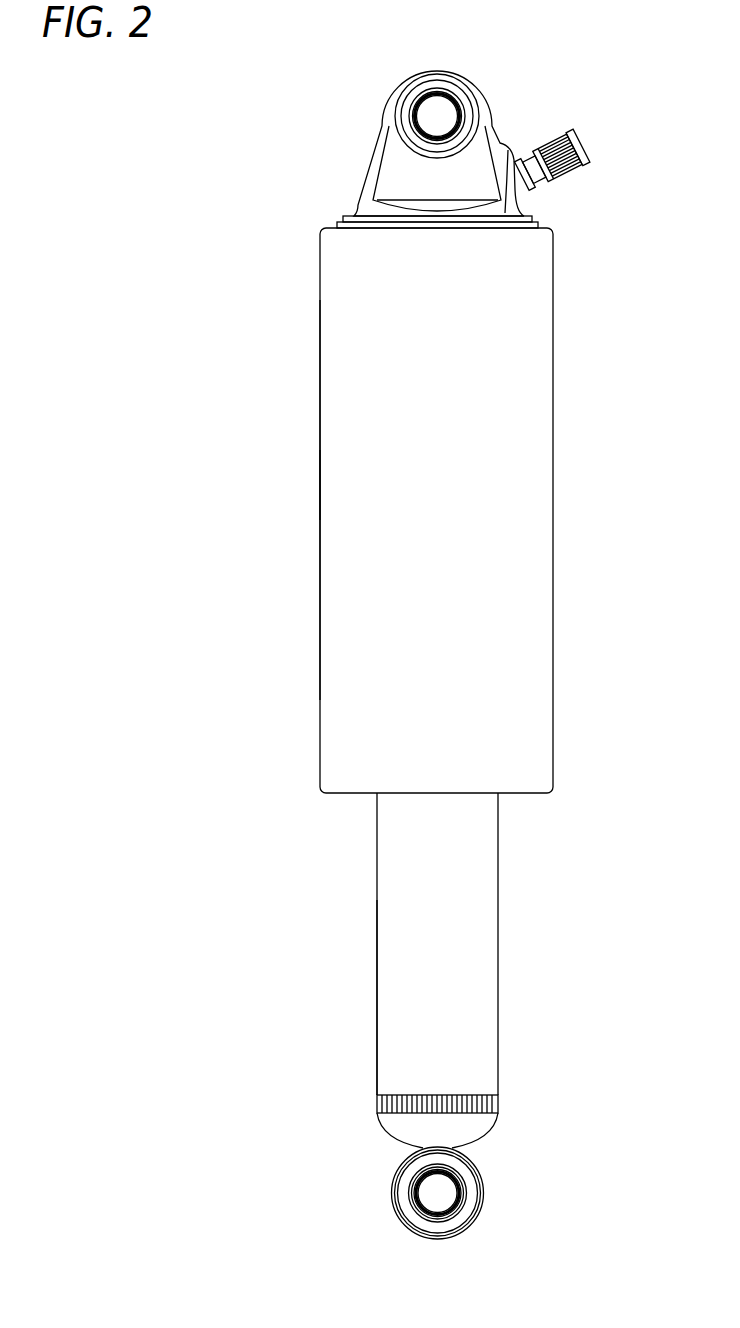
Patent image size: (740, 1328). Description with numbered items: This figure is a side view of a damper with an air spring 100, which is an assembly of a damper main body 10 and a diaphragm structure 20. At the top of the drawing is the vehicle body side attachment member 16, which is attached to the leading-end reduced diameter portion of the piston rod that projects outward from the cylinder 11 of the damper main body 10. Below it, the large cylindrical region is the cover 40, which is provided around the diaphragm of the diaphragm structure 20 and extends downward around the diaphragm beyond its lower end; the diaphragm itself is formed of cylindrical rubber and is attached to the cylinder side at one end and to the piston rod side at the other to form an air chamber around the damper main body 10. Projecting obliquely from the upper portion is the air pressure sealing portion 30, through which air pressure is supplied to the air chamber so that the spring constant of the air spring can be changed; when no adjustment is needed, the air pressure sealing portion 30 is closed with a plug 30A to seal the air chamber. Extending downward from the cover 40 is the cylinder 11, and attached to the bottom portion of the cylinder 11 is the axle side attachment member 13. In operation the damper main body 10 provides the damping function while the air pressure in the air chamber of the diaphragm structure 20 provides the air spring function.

The damper with an air spring 100 is at (263, 268).
The vehicle body side attachment member 16 is at (387, 92).
The air pressure sealing portion 30 is at (600, 173).
The plug 30A is at (577, 171).
The diaphragm structure 20 is at (318, 395).
The cover 40 is at (337, 480).
The damper main body 10 is at (376, 953).
The cylinder 11 is at (393, 1000).
The axle side attachment member 13 is at (392, 1187).